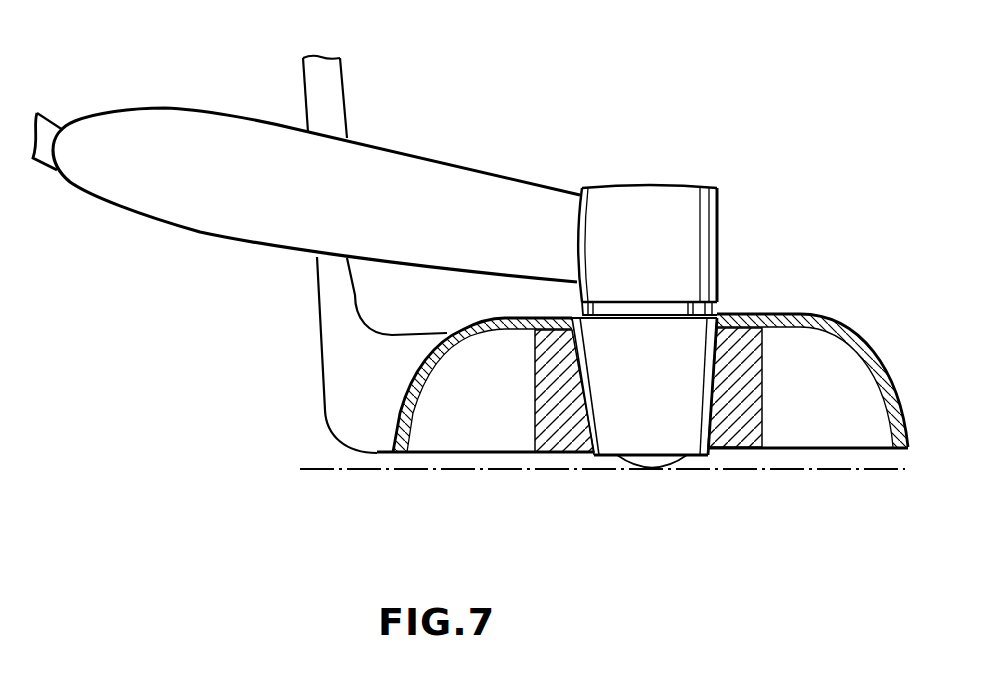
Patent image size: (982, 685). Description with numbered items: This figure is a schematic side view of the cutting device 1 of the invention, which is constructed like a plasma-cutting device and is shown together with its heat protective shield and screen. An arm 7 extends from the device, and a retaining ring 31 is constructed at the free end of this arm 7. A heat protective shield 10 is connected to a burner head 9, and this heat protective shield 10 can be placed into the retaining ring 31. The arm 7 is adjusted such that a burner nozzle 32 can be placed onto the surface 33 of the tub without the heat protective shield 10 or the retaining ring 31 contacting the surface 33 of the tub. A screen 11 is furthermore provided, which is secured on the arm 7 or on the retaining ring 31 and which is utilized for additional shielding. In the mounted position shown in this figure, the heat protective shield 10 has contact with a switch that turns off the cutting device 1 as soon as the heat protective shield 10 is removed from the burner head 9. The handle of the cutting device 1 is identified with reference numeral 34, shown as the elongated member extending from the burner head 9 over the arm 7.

The cutting device 1 is at (598, 98).
The arm 7 is at (330, 90).
The burner head 9 is at (630, 227).
The heat protective shield 10 is at (623, 427).
The screen 11 is at (837, 318).
The retaining ring 31 is at (553, 448).
The burner nozzle 32 is at (668, 470).
The surface of the tub 33 is at (353, 473).
The handle 34 is at (253, 200).